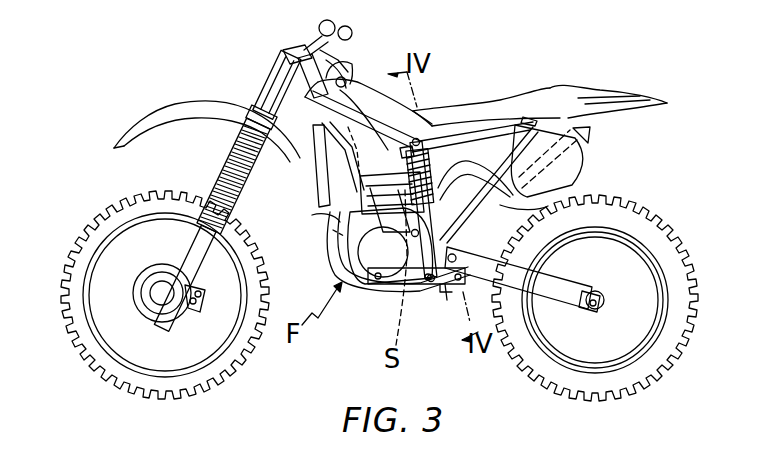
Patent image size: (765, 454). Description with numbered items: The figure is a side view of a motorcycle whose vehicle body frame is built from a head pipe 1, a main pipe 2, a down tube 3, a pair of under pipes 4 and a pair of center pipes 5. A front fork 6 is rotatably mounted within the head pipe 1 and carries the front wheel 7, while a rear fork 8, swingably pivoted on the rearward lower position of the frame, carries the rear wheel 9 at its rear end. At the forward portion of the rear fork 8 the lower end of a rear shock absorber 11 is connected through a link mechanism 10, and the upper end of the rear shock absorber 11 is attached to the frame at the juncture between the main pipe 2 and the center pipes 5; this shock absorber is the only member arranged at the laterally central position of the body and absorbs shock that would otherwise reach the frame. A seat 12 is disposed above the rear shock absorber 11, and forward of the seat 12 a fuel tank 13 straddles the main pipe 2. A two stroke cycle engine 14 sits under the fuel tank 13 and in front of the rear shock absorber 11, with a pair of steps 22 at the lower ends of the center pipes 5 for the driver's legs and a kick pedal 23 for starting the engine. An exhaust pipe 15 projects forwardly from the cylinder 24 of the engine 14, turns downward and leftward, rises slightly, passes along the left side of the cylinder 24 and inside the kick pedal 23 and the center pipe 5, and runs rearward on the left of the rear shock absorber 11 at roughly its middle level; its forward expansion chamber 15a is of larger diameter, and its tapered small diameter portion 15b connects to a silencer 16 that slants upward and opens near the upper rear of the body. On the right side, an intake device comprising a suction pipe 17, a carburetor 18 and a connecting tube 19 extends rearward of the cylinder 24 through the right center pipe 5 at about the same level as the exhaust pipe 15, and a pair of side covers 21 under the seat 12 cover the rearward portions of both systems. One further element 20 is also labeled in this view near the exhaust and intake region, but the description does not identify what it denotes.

The head pipe 1 is at (288, 82).
The main pipe 2 is at (316, 48).
The down tube 3 is at (310, 152).
The under pipes 4 is at (371, 290).
The center pipes 5 is at (462, 279).
The front fork 6 is at (192, 258).
The front wheel 7 is at (230, 354).
The rear fork 8 is at (553, 292).
The rear wheel 9 is at (662, 345).
The link mechanism 10 is at (448, 287).
The rear shock absorber 11 is at (479, 108).
The seat 12 is at (470, 106).
The fuel tank 13 is at (343, 80).
The two stroke cycle engine 14 is at (394, 263).
The exhaust pipe 15 is at (330, 275).
The expansion chamber 15a is at (333, 237).
The small diameter portion 15b is at (546, 207).
The silencer 16 is at (583, 141).
The suction pipe 17 is at (351, 141).
The carburetor 18 is at (407, 152).
The connecting tube 19 is at (411, 137).
The exhaust pipe 20 is at (485, 164).
The side covers 21 is at (580, 176).
The steps 22 is at (427, 293).
The kick pedal 23 is at (411, 242).
The cylinder 24 is at (312, 218).